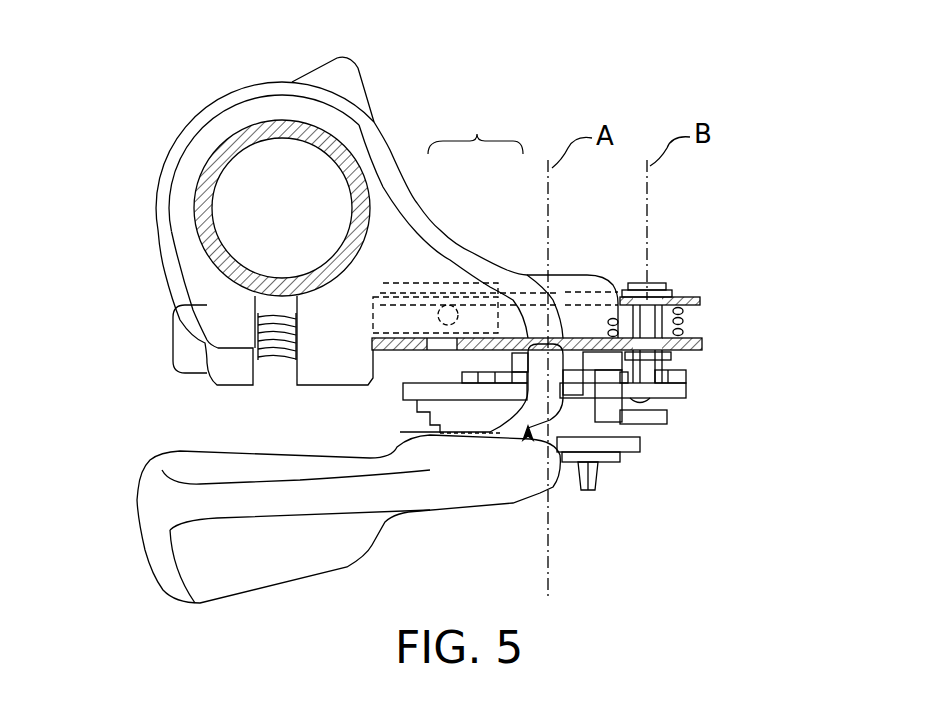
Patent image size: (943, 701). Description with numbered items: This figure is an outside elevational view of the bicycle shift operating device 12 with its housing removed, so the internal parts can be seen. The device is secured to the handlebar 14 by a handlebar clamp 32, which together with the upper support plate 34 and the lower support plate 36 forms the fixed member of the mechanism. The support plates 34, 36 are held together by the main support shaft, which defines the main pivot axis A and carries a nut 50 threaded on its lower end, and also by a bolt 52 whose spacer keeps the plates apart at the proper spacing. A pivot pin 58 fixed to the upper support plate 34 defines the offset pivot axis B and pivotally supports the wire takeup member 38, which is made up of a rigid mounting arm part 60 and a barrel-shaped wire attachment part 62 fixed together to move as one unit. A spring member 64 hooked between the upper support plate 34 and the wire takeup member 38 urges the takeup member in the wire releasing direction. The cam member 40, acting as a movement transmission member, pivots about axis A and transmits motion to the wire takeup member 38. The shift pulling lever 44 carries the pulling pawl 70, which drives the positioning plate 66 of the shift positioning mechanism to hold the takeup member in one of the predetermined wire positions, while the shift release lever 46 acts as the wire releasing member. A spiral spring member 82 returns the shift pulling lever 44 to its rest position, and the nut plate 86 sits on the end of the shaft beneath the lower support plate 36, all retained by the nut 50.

The bicycle shift operating device 12 is at (715, 188).
The handlebar 14 is at (212, 152).
The handlebar clamp 32 is at (243, 88).
The upper support plate 34 is at (710, 346).
The lower support plate 36 is at (692, 398).
The wire takeup member 38 is at (475, 131).
The cam member 40 is at (507, 358).
The shift pulling lever 44 is at (157, 563).
The shift release lever 46 is at (528, 436).
The nut 50 is at (567, 492).
The bolt 52 is at (665, 420).
The pivot pin 58 is at (657, 282).
The mounting arm part 60 is at (528, 300).
The wire attachment part 62 is at (412, 283).
The spring member 64 is at (684, 318).
The positioning plate 66 is at (690, 378).
The pulling pawl 70 is at (612, 410).
The spring member 82 is at (622, 462).
The nut plate 86 is at (600, 490).